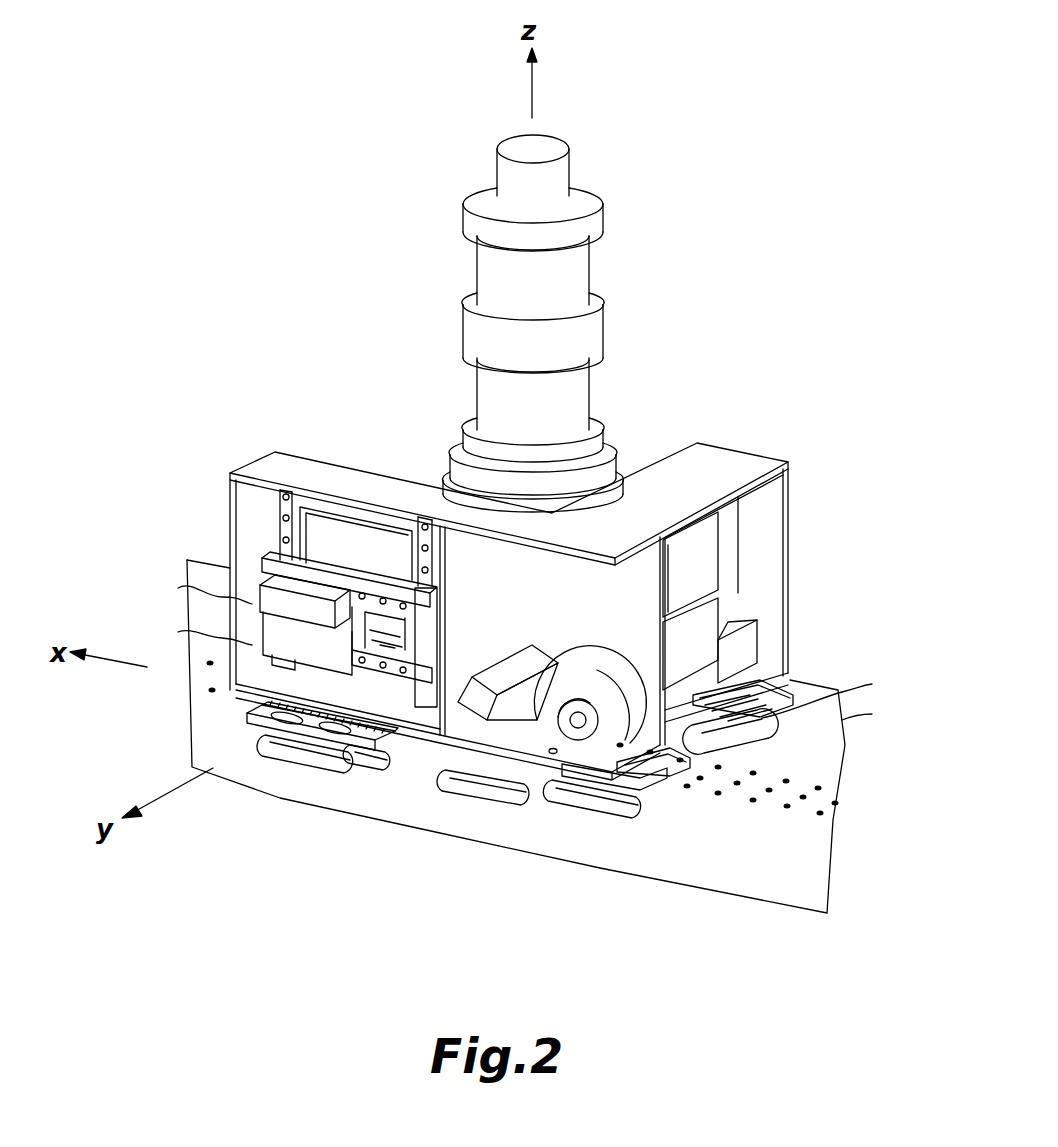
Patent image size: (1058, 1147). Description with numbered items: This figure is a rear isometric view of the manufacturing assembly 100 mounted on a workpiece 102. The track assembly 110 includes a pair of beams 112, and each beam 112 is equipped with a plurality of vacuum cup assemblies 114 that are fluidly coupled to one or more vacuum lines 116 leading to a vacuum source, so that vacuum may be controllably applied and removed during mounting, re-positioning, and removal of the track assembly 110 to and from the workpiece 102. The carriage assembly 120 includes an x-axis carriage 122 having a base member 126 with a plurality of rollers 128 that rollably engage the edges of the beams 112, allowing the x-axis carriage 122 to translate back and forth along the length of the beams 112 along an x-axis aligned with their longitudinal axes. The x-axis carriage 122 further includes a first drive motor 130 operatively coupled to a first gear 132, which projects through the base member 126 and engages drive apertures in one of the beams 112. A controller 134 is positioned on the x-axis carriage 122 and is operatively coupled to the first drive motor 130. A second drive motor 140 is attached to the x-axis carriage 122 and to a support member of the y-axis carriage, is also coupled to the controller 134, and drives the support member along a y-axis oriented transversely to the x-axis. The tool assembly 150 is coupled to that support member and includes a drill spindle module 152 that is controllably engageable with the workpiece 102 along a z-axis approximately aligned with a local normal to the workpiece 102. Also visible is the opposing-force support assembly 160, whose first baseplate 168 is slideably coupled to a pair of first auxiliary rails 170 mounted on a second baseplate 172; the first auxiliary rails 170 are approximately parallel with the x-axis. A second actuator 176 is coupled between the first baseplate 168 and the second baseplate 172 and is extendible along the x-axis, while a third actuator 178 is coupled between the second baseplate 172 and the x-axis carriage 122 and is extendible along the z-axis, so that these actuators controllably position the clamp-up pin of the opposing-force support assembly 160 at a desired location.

The manufacturing assembly 100 is at (822, 130).
The workpiece 102 is at (843, 768).
The track assembly 110 is at (170, 730).
The beam 112 is at (242, 713).
The vacuum cup assembly 114 is at (315, 752).
The vacuum line 116 is at (764, 706).
The carriage assembly 120 is at (525, 676).
The x-axis carriage 122 is at (254, 468).
The base member 126 is at (490, 760).
The roller 128 is at (388, 760).
The first drive motor 130 is at (742, 632).
The first gear 132 is at (576, 683).
The controller 134 is at (696, 548).
The second drive motor 140 is at (485, 705).
The tool assembly 150 is at (644, 230).
The drill spindle module 152 is at (463, 326).
The opposing-force support assembly 160 is at (184, 527).
The first baseplate 168 is at (278, 640).
The first auxiliary rail 170 is at (438, 590).
The second baseplate 172 is at (315, 575).
The second actuator 176 is at (278, 600).
The third actuator 178 is at (430, 620).